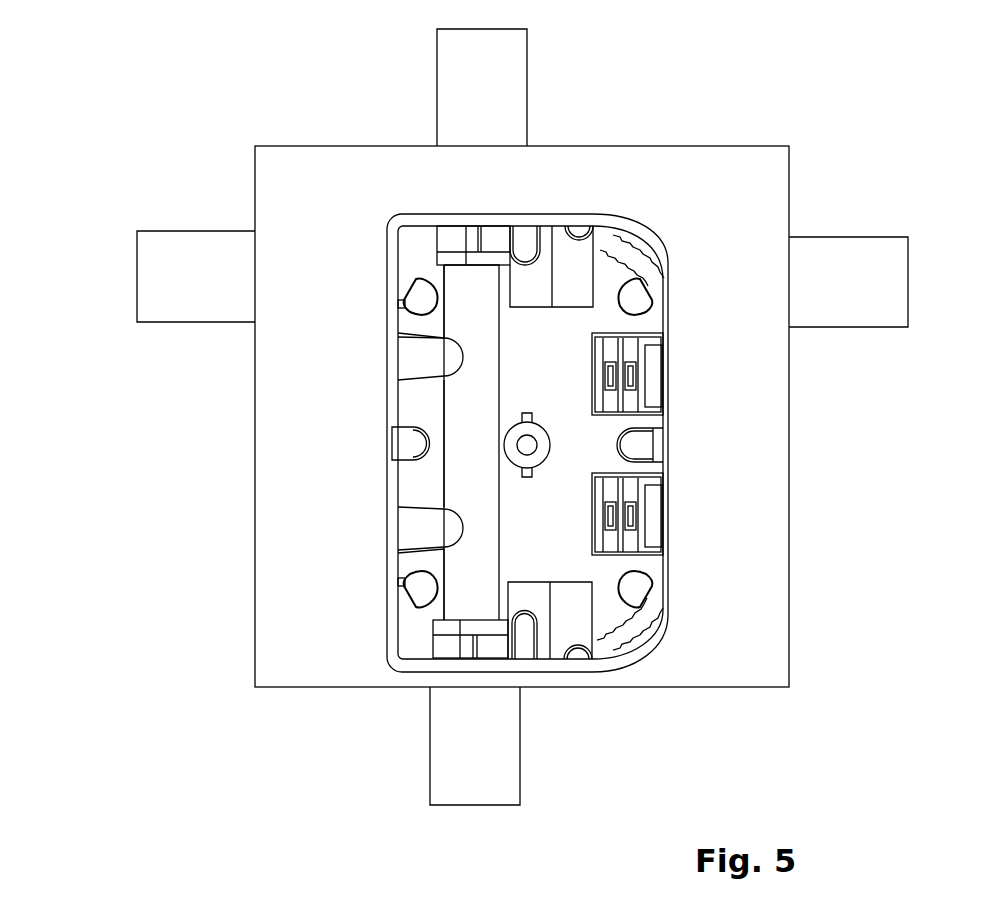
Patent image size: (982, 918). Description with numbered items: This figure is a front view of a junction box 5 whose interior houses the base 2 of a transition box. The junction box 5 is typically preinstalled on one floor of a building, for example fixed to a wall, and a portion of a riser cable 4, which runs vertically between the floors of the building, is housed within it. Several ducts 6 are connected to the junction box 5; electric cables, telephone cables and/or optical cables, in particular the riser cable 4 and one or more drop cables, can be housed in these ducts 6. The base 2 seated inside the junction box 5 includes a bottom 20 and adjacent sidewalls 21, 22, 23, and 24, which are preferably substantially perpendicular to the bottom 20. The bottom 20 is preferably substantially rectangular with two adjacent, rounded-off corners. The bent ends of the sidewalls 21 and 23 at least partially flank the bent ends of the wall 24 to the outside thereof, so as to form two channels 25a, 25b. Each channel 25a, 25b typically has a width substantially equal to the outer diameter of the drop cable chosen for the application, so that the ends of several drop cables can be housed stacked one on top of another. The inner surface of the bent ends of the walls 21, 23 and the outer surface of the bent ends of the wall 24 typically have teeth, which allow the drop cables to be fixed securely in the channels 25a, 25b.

The base 2 is at (360, 294).
The riser cable 4 is at (430, 407).
The junction box 5 is at (673, 147).
The ducts 6 is at (527, 62).
The bottom 20 is at (569, 544).
The sidewall 21 is at (528, 214).
The sidewall 22 is at (383, 499).
The sidewall 23 is at (627, 663).
The wall 24 is at (665, 460).
The channel 25a is at (680, 313).
The channel 25b is at (680, 577).